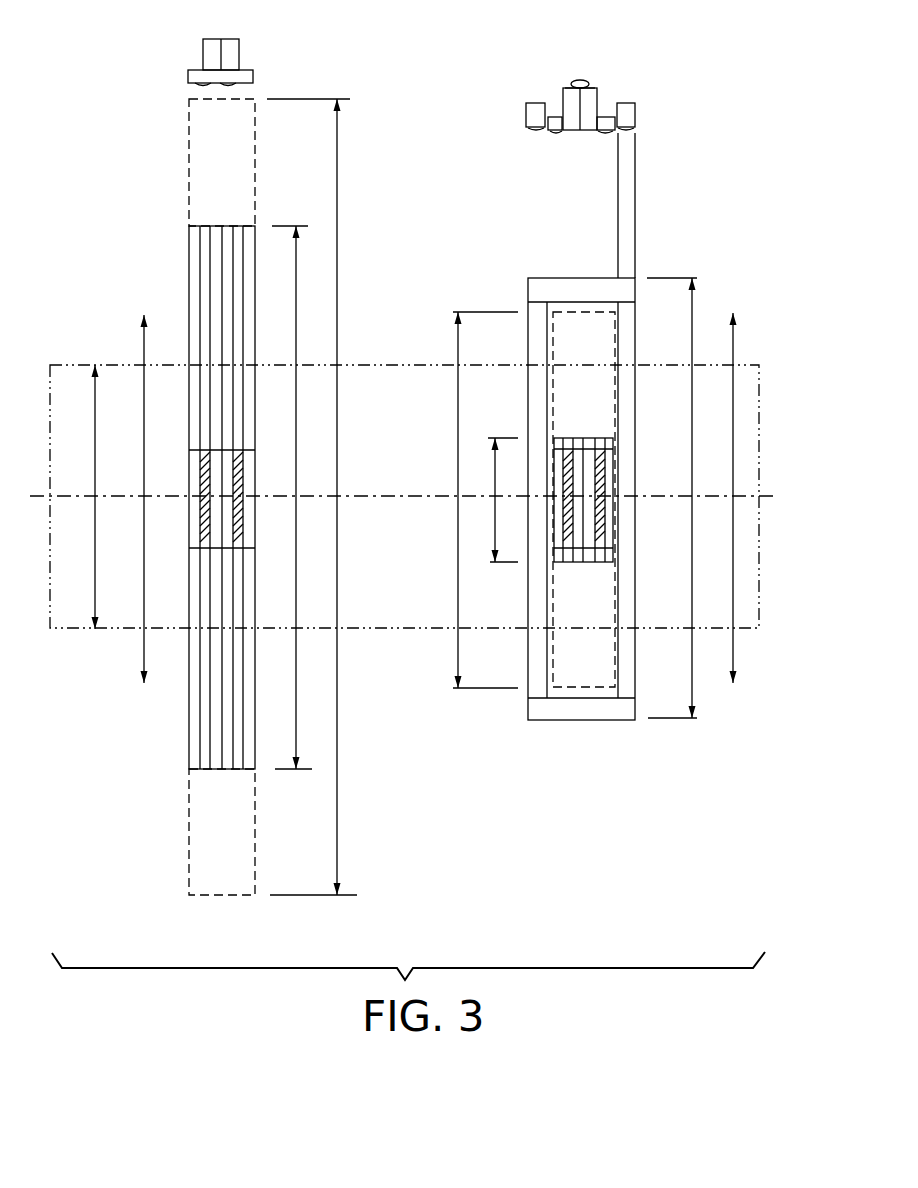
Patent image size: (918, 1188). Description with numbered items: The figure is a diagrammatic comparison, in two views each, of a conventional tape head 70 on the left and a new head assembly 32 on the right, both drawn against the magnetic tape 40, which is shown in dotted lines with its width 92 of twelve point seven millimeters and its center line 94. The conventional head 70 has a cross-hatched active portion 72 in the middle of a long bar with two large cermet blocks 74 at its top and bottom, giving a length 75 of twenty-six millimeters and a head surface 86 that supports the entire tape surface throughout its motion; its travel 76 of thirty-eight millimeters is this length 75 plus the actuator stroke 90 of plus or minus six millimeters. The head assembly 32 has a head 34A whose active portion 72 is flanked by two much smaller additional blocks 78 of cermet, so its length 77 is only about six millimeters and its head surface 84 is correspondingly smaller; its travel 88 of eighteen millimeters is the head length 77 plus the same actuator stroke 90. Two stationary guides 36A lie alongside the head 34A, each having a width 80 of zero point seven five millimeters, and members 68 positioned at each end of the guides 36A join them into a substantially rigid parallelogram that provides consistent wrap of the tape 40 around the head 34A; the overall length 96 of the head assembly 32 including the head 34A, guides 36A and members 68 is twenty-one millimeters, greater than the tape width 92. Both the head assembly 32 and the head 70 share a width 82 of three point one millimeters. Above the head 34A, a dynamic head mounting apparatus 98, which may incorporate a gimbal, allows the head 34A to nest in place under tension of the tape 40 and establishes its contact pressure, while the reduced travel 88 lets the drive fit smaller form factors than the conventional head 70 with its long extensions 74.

The head assembly 32 is at (650, 132).
The head 34A is at (597, 95).
The stationary guides 36A is at (538, 102).
The magnetic tape 40 is at (403, 633).
The members 68 is at (547, 278).
The conventional head 70 is at (178, 88).
The active portion 72 is at (243, 477).
The cermet blocks 74 is at (193, 285).
The length of head 75 is at (297, 507).
The travel of head 76 is at (340, 440).
The length of head 77 is at (490, 518).
The additional blocks 78 is at (558, 440).
The width of stationary guides 80 is at (635, 203).
The width 82 is at (142, 163).
The head surface 84 is at (568, 132).
The head surface 86 is at (243, 88).
The travel of head 88 is at (458, 430).
The actuator stroke 90 is at (146, 447).
The width of tape 92 is at (97, 527).
The center line of tape 94 is at (768, 496).
The overall length of head assembly 96 is at (692, 575).
The dynamic head mounting apparatus 98 is at (578, 80).